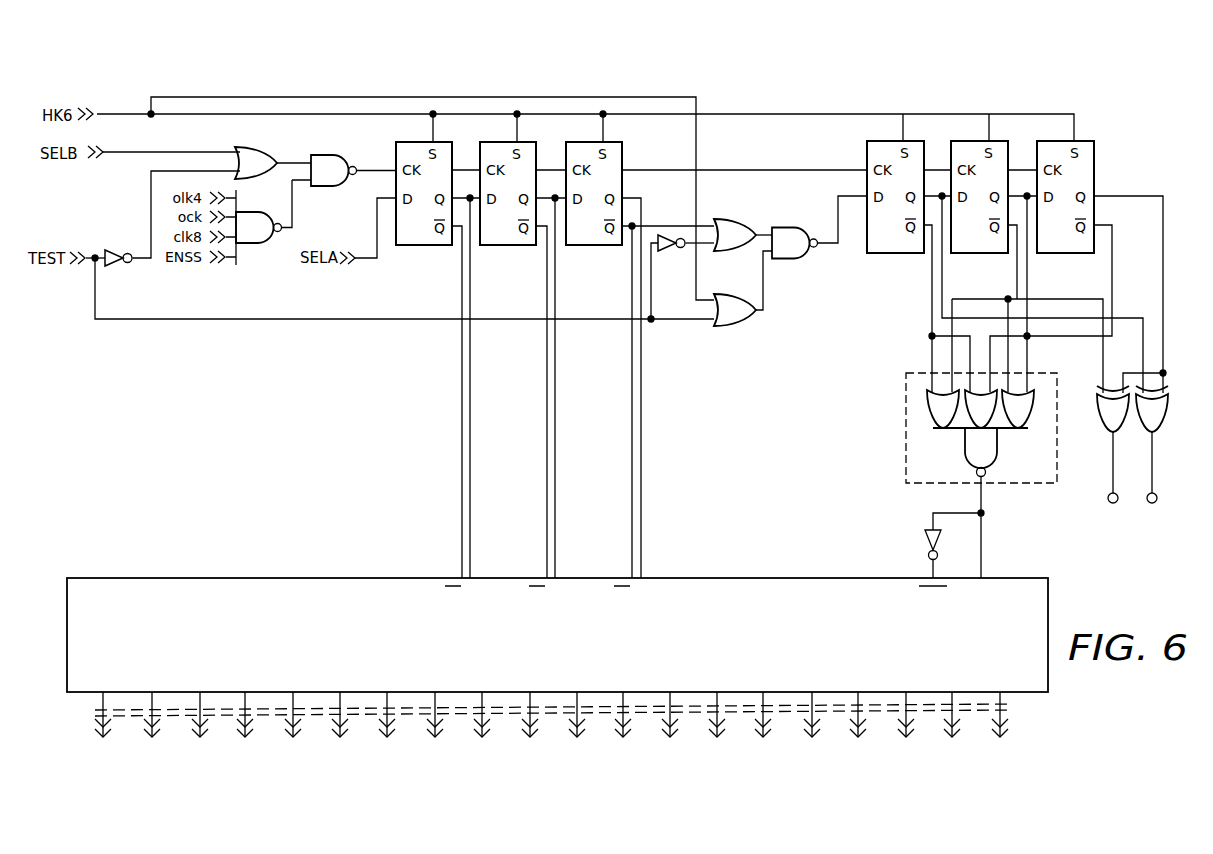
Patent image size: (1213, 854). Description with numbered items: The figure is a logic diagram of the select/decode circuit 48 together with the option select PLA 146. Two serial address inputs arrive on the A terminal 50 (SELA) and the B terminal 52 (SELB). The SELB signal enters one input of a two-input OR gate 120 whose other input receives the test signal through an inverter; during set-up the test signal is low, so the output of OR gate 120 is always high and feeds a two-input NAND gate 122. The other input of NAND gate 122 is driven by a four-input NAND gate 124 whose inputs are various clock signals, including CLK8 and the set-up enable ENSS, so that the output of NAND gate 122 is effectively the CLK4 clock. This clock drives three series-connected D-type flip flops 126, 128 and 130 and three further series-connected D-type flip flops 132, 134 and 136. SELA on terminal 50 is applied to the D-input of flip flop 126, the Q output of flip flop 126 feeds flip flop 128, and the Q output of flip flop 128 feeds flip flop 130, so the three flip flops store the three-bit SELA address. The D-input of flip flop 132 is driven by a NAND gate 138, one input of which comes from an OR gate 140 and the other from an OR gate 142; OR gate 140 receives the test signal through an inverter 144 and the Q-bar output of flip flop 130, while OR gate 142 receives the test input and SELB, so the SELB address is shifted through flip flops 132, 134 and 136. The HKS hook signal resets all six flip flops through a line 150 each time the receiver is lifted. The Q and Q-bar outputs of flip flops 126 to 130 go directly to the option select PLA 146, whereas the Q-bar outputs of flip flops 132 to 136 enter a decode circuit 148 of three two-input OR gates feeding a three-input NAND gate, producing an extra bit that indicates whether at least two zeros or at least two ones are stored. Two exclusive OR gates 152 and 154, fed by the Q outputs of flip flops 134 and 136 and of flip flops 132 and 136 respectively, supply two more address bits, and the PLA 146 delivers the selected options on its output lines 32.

The option select output lines 32 is at (1013, 705).
The select/decode circuit 48 is at (165, 427).
The A terminal 50 is at (370, 259).
The B terminal 52 is at (133, 155).
The two-input OR gate 120 is at (262, 158).
The two-input NAND gate 122 is at (333, 158).
The four-input NAND gate 124 is at (266, 246).
The D-type flip flop 126 is at (426, 246).
The D-type flip flop 128 is at (512, 246).
The D-type flip flop 130 is at (598, 246).
The D-type flip flop 132 is at (866, 152).
The D-type flip flop 134 is at (978, 256).
The D-type flip flop 136 is at (1096, 152).
The NAND gate 138 is at (790, 262).
The OR gate 140 is at (735, 223).
The OR gate 142 is at (735, 297).
The inverter 144 is at (664, 252).
The option select PLA 146 is at (765, 578).
The decode circuit 148 is at (951, 479).
The line 150 is at (717, 116).
The exclusive OR gate 152 is at (1107, 426).
The exclusive OR gate 154 is at (1159, 426).